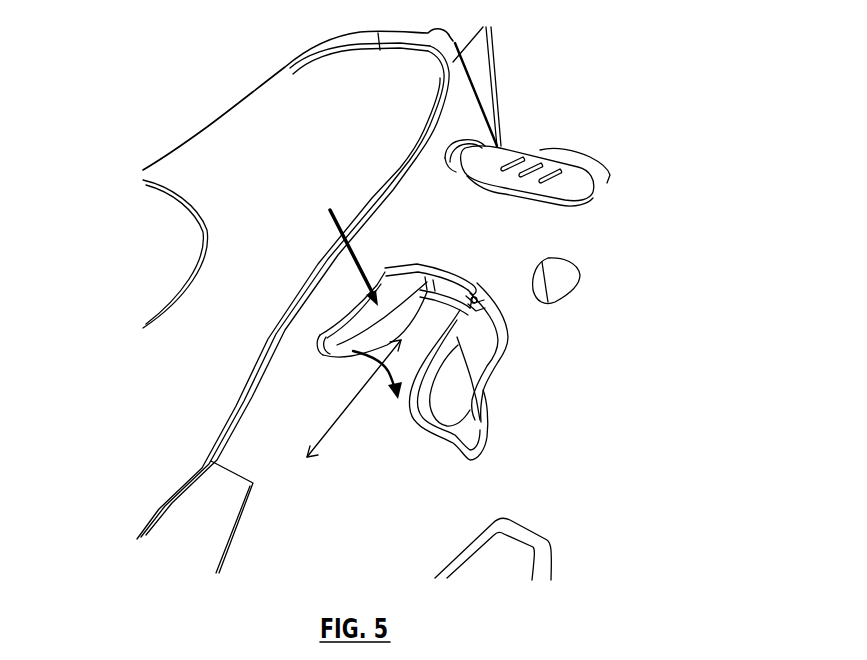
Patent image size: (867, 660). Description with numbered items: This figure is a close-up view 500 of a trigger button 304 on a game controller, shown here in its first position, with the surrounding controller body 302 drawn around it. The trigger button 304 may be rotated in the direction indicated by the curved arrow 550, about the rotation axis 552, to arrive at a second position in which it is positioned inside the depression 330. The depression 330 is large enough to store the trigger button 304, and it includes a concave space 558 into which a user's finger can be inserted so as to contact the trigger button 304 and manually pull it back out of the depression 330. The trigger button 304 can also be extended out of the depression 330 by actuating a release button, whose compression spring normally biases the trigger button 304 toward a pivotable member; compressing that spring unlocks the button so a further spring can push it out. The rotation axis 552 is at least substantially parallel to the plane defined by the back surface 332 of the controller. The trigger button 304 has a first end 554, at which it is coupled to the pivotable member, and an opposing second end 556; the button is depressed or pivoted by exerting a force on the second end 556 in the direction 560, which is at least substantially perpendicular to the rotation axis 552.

The housing frame 302 is at (197, 110).
The trigger button 304 is at (343, 299).
The depression 330 is at (480, 415).
The back surface 332 is at (596, 316).
The close-up view 500 is at (680, 92).
The curved arrow 550 is at (383, 398).
The rotation axis 552 is at (329, 430).
The first end 554 is at (477, 317).
The second end 556 is at (330, 352).
The concave space 558 is at (427, 435).
The direction 560 is at (357, 257).